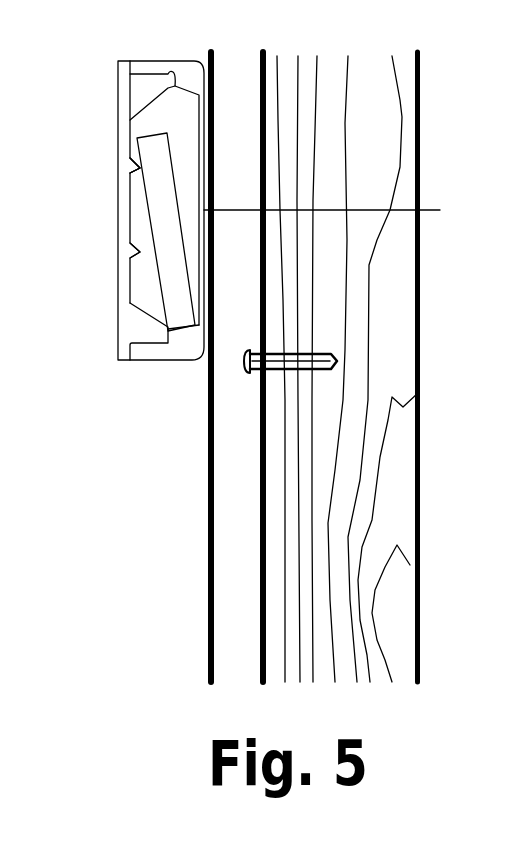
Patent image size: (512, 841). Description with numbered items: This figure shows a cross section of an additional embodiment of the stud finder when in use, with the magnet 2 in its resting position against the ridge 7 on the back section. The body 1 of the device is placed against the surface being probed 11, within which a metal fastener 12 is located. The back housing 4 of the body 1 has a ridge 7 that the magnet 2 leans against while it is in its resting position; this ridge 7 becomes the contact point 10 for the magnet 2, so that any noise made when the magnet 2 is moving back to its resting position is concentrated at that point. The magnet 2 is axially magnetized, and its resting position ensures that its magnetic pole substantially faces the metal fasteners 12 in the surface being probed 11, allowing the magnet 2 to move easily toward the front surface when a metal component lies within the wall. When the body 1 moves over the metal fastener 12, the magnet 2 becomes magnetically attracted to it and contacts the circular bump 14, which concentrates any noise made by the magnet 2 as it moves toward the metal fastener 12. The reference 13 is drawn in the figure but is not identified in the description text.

The body 1 is at (116, 93).
The magnet 2 is at (172, 270).
The back housing 4 is at (132, 327).
The ridge 7 is at (140, 252).
The contact point 10 is at (140, 168).
The surface being probed 11 is at (225, 450).
The metal fastener 12 is at (343, 352).
The wooden panel 13 is at (395, 463).
The circular bump 14 is at (335, 212).